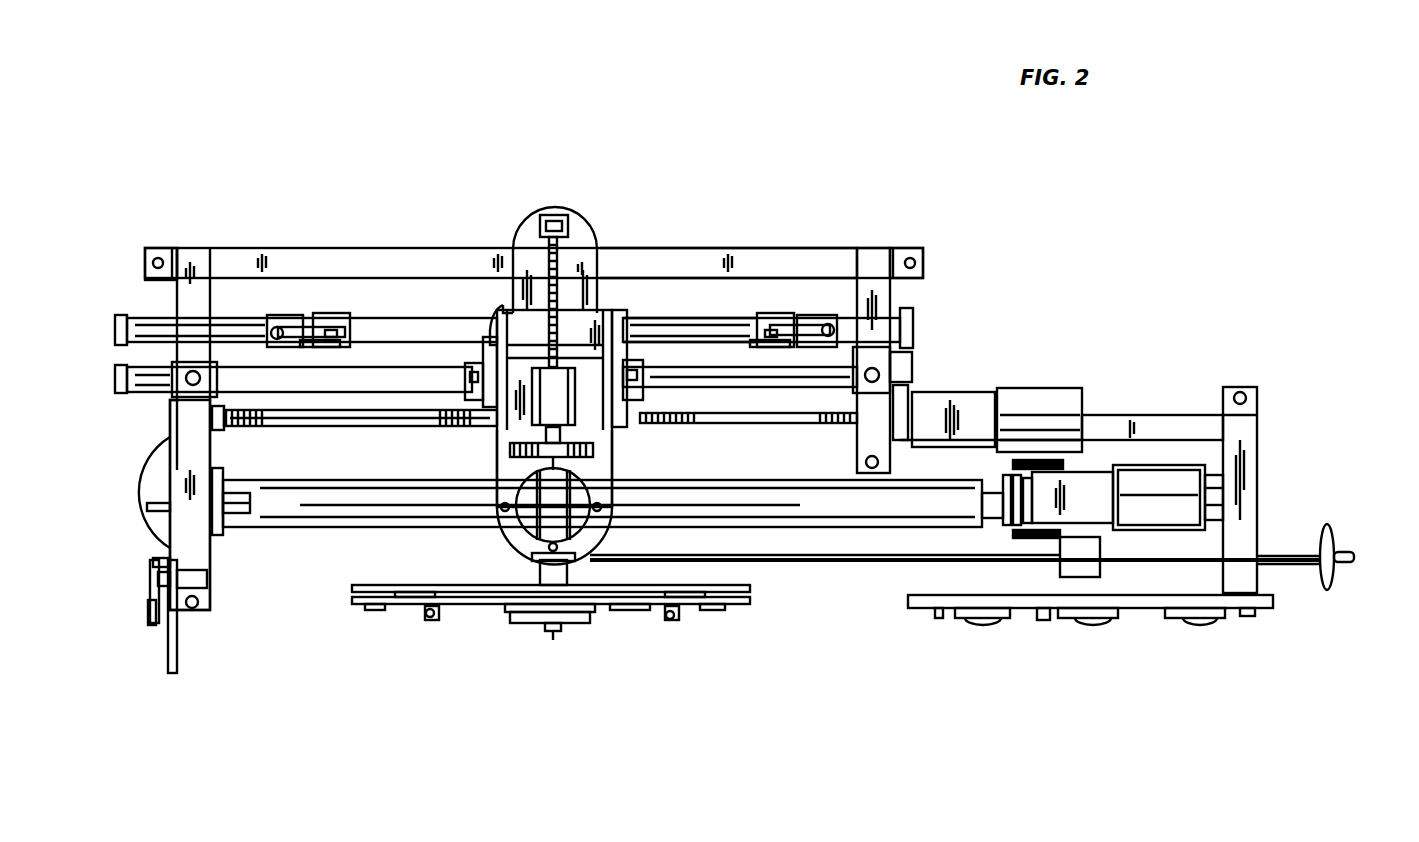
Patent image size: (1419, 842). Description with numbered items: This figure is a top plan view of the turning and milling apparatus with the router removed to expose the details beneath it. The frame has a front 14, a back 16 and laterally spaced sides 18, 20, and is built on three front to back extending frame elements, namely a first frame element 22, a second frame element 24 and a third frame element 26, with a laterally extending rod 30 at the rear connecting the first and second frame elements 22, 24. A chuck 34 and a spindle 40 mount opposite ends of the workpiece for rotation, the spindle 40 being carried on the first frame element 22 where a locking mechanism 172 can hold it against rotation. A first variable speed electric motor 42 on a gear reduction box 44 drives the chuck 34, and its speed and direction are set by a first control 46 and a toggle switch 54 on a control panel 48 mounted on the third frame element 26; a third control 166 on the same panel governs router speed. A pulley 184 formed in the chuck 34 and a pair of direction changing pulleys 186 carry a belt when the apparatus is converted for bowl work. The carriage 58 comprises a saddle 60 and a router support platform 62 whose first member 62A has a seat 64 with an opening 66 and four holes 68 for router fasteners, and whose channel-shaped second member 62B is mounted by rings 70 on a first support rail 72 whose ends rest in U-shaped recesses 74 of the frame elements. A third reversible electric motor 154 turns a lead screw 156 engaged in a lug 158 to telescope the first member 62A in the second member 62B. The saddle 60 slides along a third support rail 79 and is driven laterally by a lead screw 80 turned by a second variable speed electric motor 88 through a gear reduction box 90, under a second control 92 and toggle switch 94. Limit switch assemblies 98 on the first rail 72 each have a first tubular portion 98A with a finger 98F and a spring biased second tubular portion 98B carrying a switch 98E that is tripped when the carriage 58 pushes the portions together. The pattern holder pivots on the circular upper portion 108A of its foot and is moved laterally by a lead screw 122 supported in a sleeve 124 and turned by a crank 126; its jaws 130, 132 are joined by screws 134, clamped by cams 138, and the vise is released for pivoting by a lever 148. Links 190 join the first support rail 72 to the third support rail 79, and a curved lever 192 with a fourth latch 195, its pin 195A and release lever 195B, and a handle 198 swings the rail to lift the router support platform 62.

The front 14 is at (410, 513).
The back 16 is at (708, 254).
The side 18 is at (175, 421).
The side 20 is at (1257, 460).
The first frame element 22 is at (200, 245).
The second frame element 24 is at (878, 258).
The third frame element 26 is at (1247, 517).
The laterally extending rod 30 is at (369, 260).
The chuck 34 is at (993, 513).
The spindle 40 is at (237, 523).
The first variable speed electric motor 42 is at (1153, 483).
The gear reduction box 44 is at (1087, 487).
The first control 46 is at (1005, 623).
The control panel 48 is at (917, 620).
The toggle switch 54 is at (930, 617).
The carriage 58 is at (477, 333).
The saddle 60 is at (640, 358).
The router support platform 62 is at (607, 300).
The first member 62A is at (597, 435).
The second member 62B is at (586, 238).
The seat 64 is at (503, 460).
The opening 66 is at (590, 503).
The holes 68 is at (490, 523).
The rings 70 is at (477, 343).
The first support rail 72 is at (707, 327).
The U-shaped recesses 74 is at (198, 313).
The third support rail 79 is at (747, 370).
The lead screw 80 is at (750, 417).
The second variable speed electric motor 88 is at (1037, 400).
The gear reduction box 90 is at (962, 407).
The second control 92 is at (1123, 617).
The toggle switch 94 is at (1043, 620).
The limit switch assemblies 98 is at (297, 300).
The first tubular portion 98A is at (282, 313).
The second tubular portion 98B is at (344, 315).
The switch 98E is at (355, 352).
The finger 98F is at (308, 316).
The circular upper portion 108A is at (582, 623).
The lead screw 122 is at (650, 560).
The sleeve 124 is at (1080, 567).
The crank 126 is at (1328, 540).
The jaw 130 is at (503, 610).
The jaw 132 is at (447, 587).
The screws 134 is at (420, 597).
The cams 138 is at (425, 623).
The lever 148 is at (548, 632).
The third reversible electric motor 154 is at (463, 402).
The lead screw 156 is at (527, 250).
The lug 158 is at (570, 208).
The third control 166 is at (1220, 617).
The locking mechanism 172 is at (157, 517).
The pulley 184 is at (993, 487).
The direction changing pulleys 186 is at (1013, 467).
The links 190 is at (118, 352).
The curved lever 192 is at (170, 431).
The fourth latch 195 is at (142, 588).
The pin 195A is at (152, 553).
The lever 195B is at (145, 618).
The handle 198 is at (167, 662).